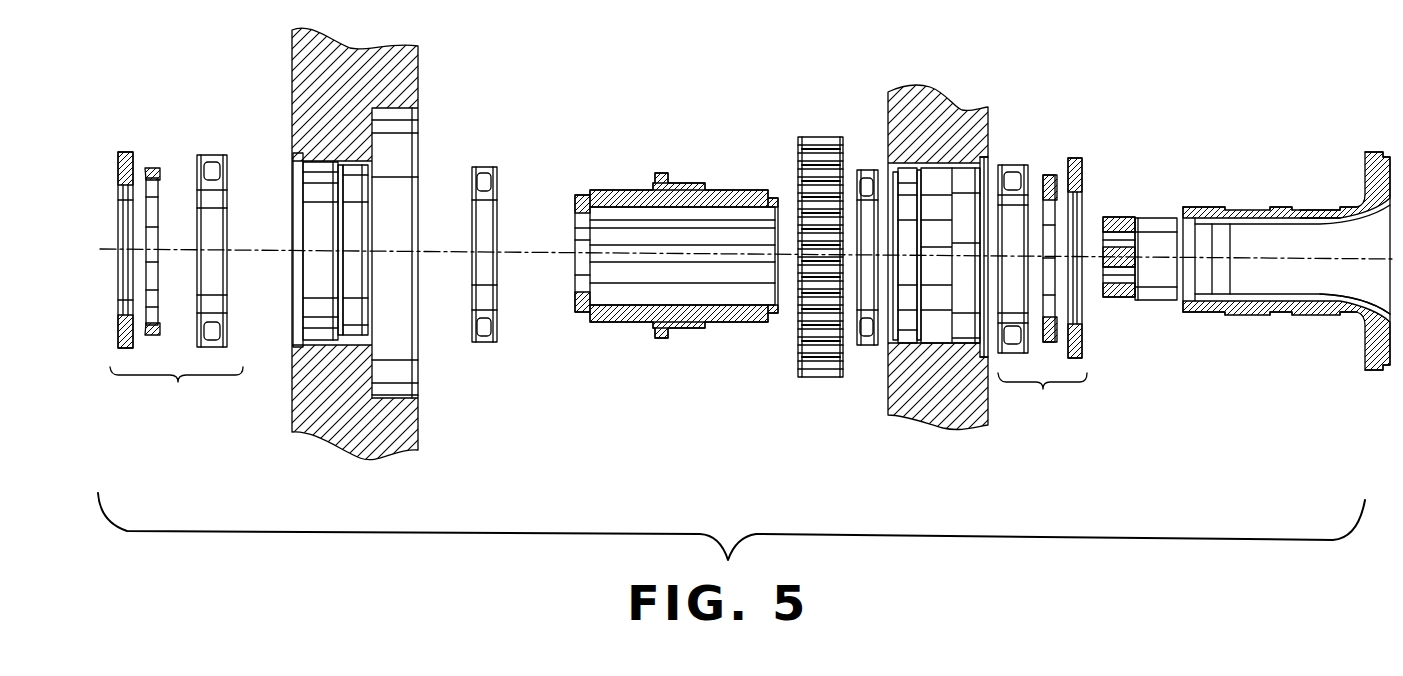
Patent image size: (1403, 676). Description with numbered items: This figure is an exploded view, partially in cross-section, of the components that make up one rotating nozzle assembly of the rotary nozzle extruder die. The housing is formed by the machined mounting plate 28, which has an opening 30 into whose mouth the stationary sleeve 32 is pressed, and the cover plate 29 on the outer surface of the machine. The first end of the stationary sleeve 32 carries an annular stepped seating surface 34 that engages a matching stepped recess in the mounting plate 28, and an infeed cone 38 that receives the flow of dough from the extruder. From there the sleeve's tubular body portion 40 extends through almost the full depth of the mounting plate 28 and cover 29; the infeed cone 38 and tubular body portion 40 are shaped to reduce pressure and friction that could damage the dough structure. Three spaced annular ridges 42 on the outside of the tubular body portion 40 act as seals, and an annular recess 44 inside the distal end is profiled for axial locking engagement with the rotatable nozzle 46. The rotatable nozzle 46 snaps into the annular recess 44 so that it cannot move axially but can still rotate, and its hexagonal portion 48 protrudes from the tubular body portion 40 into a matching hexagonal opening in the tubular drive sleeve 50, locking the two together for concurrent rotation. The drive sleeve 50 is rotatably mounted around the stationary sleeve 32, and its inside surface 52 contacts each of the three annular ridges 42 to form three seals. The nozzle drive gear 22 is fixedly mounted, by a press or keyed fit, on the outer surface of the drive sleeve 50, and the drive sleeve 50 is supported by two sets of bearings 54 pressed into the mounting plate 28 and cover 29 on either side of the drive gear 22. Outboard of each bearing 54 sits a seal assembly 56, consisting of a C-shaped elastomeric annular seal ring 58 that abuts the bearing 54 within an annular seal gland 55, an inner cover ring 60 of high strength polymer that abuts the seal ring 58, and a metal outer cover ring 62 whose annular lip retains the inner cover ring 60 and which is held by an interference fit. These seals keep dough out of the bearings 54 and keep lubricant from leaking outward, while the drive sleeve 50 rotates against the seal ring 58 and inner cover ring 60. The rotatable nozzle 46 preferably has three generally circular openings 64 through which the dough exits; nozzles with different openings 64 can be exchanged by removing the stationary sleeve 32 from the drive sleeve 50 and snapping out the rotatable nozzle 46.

The nozzle drive gear 22 is at (812, 137).
The mounting plate 28 is at (937, 108).
The cover plate 29 is at (305, 88).
The opening 30 is at (968, 365).
The stationary sleeve 32 is at (1317, 208).
The annular stepped seating surface 34 is at (1373, 160).
The infeed cone 38 is at (1350, 301).
The tubular body portion 40 is at (1250, 208).
The annular ridges 42 is at (1215, 207).
The annular recess 44 is at (1195, 312).
The rotatable nozzle 46 is at (1117, 216).
The hexagonal portion 48 is at (1107, 297).
The drive sleeve 50 is at (625, 190).
The inside surface 52 is at (640, 305).
The bearings 54 is at (475, 168).
The annular seal gland 55 is at (323, 343).
The seal assembly 56 is at (598, 392).
The annular seal ring 58 is at (212, 155).
The inner cover ring 60 is at (148, 168).
The outer cover ring 62 is at (118, 152).
The openings 64 is at (1104, 217).